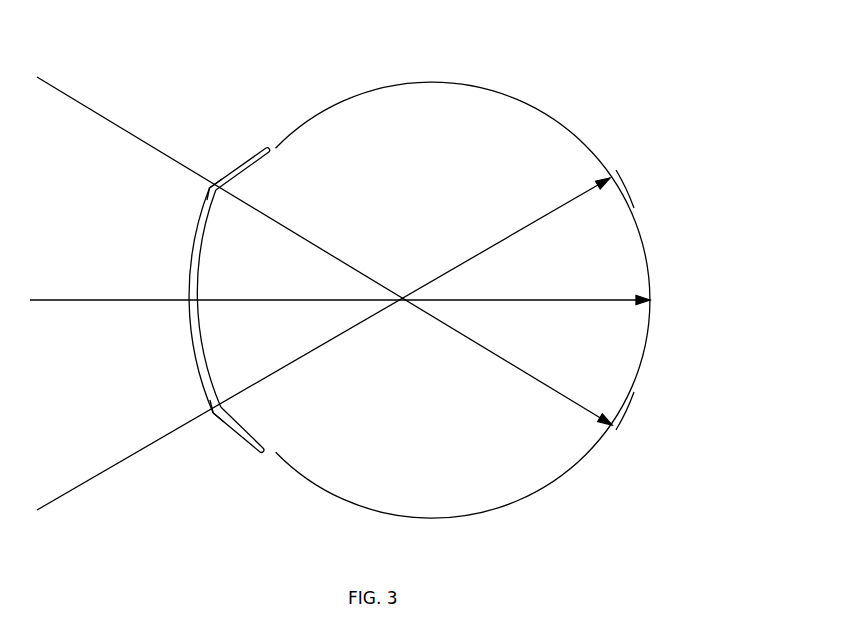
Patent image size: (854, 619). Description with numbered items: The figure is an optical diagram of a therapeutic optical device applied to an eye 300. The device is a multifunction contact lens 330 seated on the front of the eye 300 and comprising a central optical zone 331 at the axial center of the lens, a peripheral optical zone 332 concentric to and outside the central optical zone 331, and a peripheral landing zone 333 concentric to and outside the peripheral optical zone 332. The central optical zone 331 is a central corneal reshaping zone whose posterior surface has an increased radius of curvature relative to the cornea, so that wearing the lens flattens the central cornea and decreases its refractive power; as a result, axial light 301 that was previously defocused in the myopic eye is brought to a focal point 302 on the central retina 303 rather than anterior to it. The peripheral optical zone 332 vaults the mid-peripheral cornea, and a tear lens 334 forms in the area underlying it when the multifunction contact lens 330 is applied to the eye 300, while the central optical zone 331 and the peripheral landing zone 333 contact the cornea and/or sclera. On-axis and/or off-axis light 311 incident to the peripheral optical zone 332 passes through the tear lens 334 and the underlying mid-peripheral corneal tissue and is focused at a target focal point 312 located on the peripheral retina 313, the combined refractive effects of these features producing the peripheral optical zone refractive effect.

The eye 300 is at (274, 47).
The axial light 301 is at (76, 299).
The focal point 302 is at (654, 305).
The central retina 303 is at (652, 297).
The on-axis and/or off-axis light 311 is at (97, 113).
The target focal point 312 is at (614, 180).
The peripheral retina 313 is at (626, 200).
The multifunction contact lens 330 is at (243, 152).
The central optical zone 331 is at (188, 318).
The peripheral optical zone 332 is at (207, 188).
The peripheral landing zone 333 is at (237, 436).
The tear lens 334 is at (206, 200).